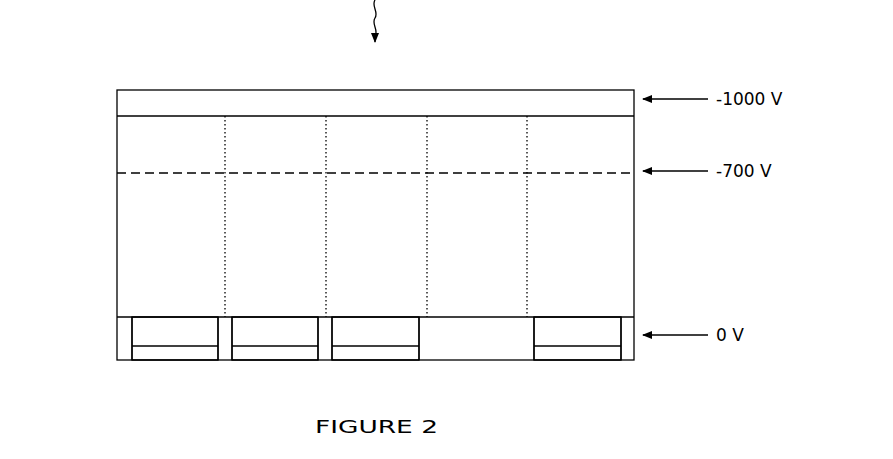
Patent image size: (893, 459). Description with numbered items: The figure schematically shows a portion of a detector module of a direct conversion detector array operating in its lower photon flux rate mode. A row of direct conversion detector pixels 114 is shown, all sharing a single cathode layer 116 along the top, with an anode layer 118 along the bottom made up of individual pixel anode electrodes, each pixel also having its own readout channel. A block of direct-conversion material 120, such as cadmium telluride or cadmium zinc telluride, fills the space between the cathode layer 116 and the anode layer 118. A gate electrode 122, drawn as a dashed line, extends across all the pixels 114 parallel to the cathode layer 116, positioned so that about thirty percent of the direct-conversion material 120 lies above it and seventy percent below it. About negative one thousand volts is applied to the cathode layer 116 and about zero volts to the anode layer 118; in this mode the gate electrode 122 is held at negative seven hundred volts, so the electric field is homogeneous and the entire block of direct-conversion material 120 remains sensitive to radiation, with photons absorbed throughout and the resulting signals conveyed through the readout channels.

The direct conversion detector pixels 114 is at (159, 86).
The cathode layer 116 is at (117, 104).
The anode layer 118 is at (108, 321).
The direct-conversion material 120 is at (117, 218).
The gate electrode 122 is at (117, 173).